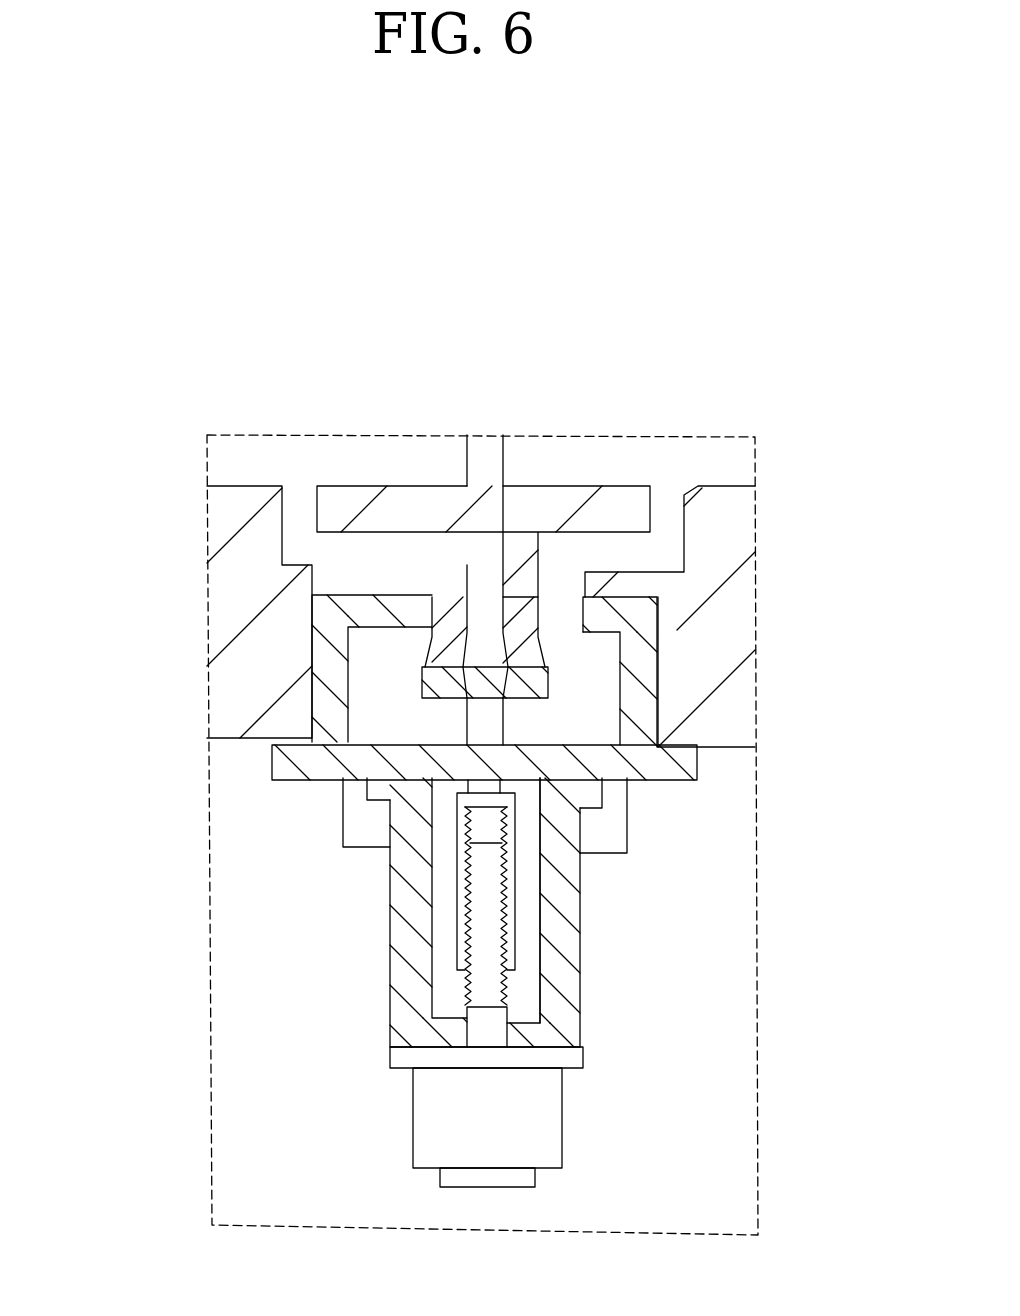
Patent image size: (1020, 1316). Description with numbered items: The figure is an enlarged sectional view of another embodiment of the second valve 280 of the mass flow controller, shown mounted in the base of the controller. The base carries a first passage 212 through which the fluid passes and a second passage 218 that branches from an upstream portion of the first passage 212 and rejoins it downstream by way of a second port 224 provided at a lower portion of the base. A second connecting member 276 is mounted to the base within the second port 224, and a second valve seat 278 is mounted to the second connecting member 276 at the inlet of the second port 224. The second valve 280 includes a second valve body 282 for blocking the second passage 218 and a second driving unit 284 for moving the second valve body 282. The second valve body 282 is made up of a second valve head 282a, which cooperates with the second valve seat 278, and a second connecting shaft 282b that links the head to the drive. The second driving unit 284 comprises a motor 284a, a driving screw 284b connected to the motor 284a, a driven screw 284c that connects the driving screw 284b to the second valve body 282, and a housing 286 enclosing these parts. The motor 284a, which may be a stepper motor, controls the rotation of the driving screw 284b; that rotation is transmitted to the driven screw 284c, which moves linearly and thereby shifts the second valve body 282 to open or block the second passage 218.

The first passage 212 is at (237, 456).
The second passage 218 is at (295, 545).
The second port 224 is at (598, 699).
The second connecting member 276 is at (323, 620).
The second valve seat 278 is at (518, 627).
The second valve 280 is at (648, 847).
The second valve body 282 is at (415, 702).
The second valve head 282a is at (433, 682).
The second connecting shaft 282b is at (665, 783).
The second driving unit 284 is at (609, 1022).
The motor 284a is at (432, 1118).
The driving screw 284b is at (582, 984).
The driven screw 284c is at (455, 930).
The housing 286 is at (403, 1012).